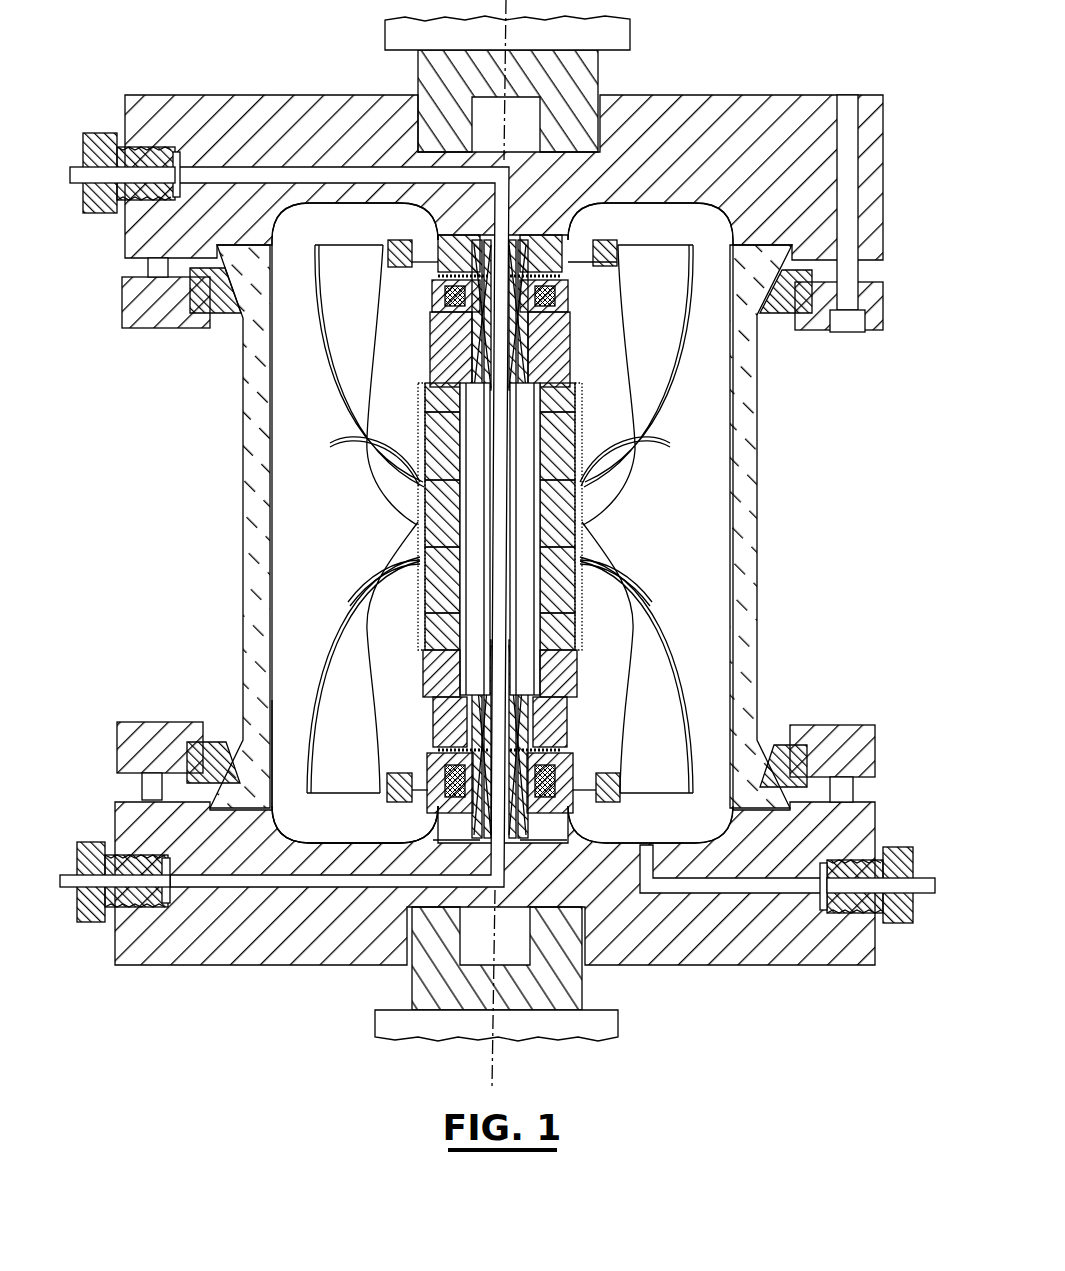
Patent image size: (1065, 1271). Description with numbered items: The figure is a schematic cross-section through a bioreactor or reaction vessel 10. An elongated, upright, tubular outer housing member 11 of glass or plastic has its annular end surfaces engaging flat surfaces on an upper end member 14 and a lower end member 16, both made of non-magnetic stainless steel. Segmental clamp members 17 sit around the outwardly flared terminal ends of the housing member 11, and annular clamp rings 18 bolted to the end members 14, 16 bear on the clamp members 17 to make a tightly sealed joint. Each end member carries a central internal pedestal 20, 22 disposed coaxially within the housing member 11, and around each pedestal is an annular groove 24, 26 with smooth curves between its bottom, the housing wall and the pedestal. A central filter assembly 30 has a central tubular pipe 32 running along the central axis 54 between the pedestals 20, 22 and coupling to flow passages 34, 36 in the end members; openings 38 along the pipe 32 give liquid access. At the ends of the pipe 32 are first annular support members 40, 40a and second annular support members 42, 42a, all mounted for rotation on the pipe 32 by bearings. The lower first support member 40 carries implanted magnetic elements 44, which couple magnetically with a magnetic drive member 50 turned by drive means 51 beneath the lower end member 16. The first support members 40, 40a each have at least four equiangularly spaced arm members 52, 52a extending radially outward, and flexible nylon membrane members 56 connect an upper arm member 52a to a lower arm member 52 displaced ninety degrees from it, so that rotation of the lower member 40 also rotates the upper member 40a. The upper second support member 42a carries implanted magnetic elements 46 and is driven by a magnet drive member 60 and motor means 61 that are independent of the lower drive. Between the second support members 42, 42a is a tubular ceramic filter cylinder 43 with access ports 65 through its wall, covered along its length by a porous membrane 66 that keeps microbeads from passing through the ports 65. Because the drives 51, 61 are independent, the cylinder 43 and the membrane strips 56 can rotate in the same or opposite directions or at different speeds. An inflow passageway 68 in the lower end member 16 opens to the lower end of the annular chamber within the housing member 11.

The reaction vessel 10 is at (802, 558).
The tubular outer housing member 11 is at (757, 462).
The upper end member 14 is at (762, 100).
The lower end member 16 is at (780, 965).
The segmental clamp members 17 is at (212, 330).
The annular clamp rings 18 is at (148, 305).
The internal pedestal 20 is at (580, 810).
The internal pedestal 22 is at (438, 273).
The annular groove 24 is at (332, 840).
The annular groove 26 is at (368, 205).
The central filter assembly 30 is at (609, 659).
The central tubular pipe 32 is at (530, 505).
The flow passage 34 is at (237, 882).
The flow passage 36 is at (250, 180).
The flow openings 38 is at (420, 508).
The lower first annular support member 40 is at (557, 745).
The upper first annular support member 40a is at (570, 268).
The lower second annular support member 42 is at (560, 720).
The upper second annular support member 42a is at (577, 327).
The tubular ceramic member 43 is at (570, 525).
The magnetic elements 44 is at (440, 730).
The magnetic elements 46 is at (437, 318).
The magnetic drive member 50 is at (432, 983).
The drive means 51 is at (400, 1030).
The arm members 52 is at (398, 800).
The arm members 52a is at (605, 244).
The central axis 54 is at (493, 1068).
The flexible membrane members 56 is at (645, 372).
The magnet drive member 60 is at (575, 78).
The motor means 61 is at (620, 38).
The access ports 65 is at (333, 445).
The porous membrane 66 is at (418, 593).
The inflow passageway 68 is at (705, 888).